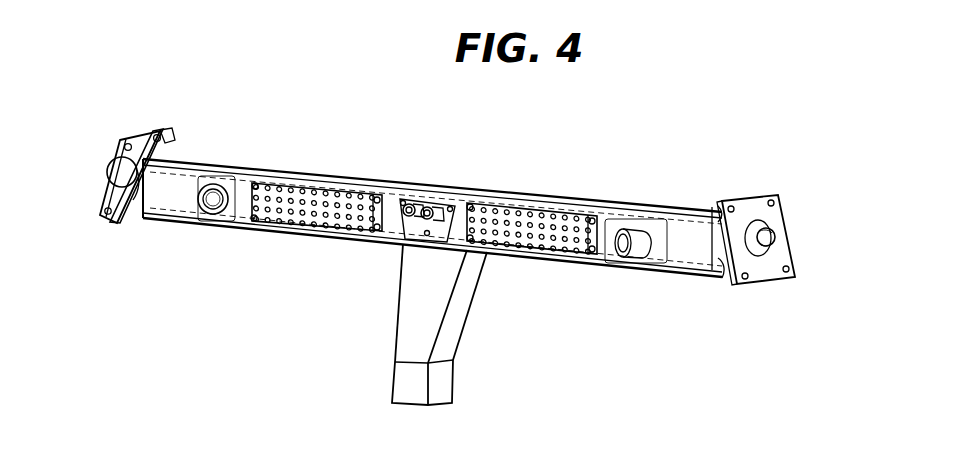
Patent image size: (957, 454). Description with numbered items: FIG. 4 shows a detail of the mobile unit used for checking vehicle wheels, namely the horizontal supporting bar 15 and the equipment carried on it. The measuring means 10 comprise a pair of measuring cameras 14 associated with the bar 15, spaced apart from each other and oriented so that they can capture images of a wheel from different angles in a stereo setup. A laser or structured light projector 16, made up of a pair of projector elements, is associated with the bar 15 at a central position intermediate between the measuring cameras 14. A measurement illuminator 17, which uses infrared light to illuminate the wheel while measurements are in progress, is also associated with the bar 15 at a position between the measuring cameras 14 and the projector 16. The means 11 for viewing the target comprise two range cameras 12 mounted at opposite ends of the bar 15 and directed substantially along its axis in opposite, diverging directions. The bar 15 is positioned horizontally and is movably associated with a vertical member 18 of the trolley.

The measuring means 10 is at (223, 218).
The means for viewing the target 11 is at (93, 205).
The range camera 12 is at (768, 227).
The measuring camera 14 is at (110, 161).
The supporting bar 15 is at (268, 177).
The laser or structured light projector 16 is at (409, 205).
The measurement illuminator 17 is at (296, 227).
The vertical member 18 is at (405, 311).